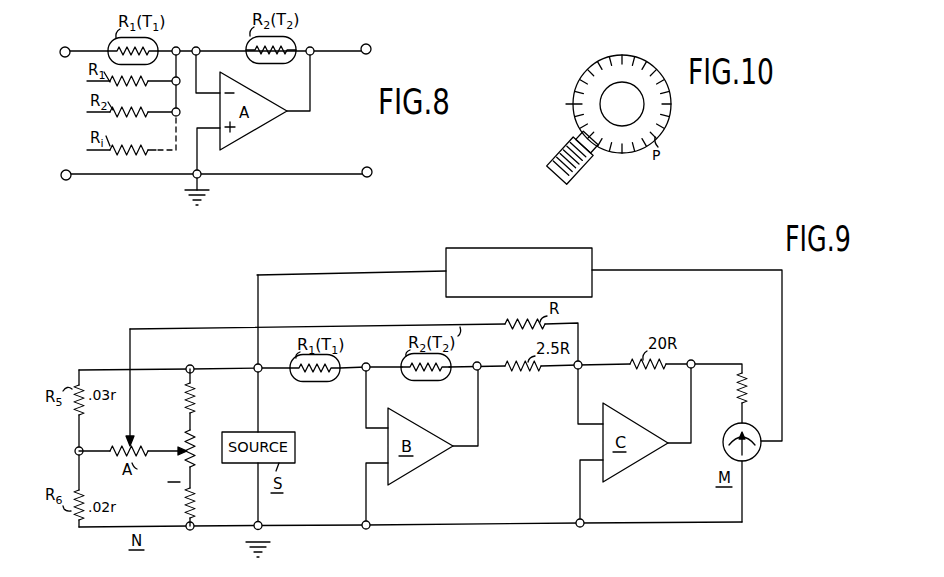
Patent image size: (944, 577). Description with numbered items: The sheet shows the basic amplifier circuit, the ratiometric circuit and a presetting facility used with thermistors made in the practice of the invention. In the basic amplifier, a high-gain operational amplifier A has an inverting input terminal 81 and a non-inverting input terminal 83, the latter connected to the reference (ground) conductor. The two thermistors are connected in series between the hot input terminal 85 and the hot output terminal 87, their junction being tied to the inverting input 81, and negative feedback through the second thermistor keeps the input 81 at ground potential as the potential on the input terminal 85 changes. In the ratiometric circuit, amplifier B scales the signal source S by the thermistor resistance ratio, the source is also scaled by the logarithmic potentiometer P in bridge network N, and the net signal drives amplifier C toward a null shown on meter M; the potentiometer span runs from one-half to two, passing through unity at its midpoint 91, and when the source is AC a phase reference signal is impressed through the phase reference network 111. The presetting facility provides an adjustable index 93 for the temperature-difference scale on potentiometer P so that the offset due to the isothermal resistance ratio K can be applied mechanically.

In FIG. 8, the inverting input terminal 81 is at (216, 90).
In FIG. 8, the non-inverting input terminal 83 is at (214, 134).
In FIG. 8, the input terminal 85 is at (61, 52).
In FIG. 8, the output terminal 87 is at (370, 47).
In FIG. 9, the midpoint 91 is at (183, 441).
In FIG. 10, the adjustable index 93 is at (592, 161).
In FIG. 9, the phase reference network 111 is at (592, 252).